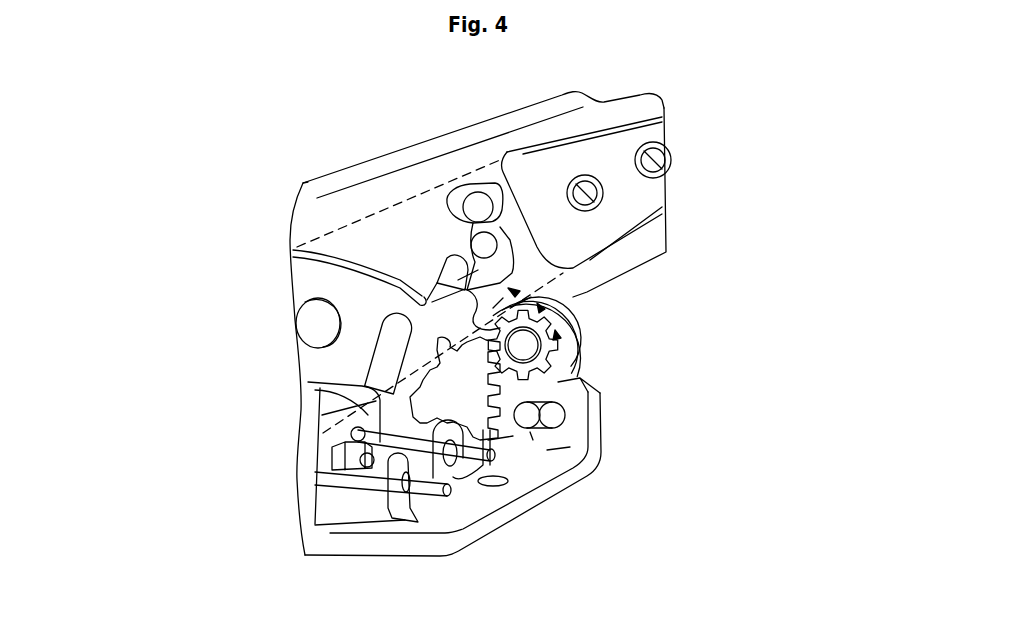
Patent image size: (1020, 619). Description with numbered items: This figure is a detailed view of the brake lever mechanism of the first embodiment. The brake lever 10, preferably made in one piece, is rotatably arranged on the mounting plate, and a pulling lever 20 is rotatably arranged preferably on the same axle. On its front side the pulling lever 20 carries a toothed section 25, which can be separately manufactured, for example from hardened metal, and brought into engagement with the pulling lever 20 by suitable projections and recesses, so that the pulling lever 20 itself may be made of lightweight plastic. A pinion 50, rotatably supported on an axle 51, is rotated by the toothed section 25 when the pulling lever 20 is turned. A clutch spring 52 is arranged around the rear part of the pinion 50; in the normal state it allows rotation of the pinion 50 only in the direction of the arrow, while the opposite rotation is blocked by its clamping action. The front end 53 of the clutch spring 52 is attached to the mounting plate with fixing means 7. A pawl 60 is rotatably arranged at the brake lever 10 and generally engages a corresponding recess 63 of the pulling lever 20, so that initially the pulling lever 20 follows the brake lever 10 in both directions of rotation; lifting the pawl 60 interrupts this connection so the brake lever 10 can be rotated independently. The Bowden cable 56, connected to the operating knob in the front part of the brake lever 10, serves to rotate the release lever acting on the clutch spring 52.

The brake lever 10 is at (323, 212).
The pulling lever 20 is at (318, 274).
The Bowden cable 56 is at (473, 195).
The pawl 60 is at (480, 276).
The recess 63 is at (460, 273).
The clutch spring 52 is at (572, 304).
The pinion 50 is at (557, 318).
The axle 51 is at (523, 353).
The fixing means 7 is at (566, 415).
The front end 53 is at (533, 436).
The toothed section 25 is at (453, 395).